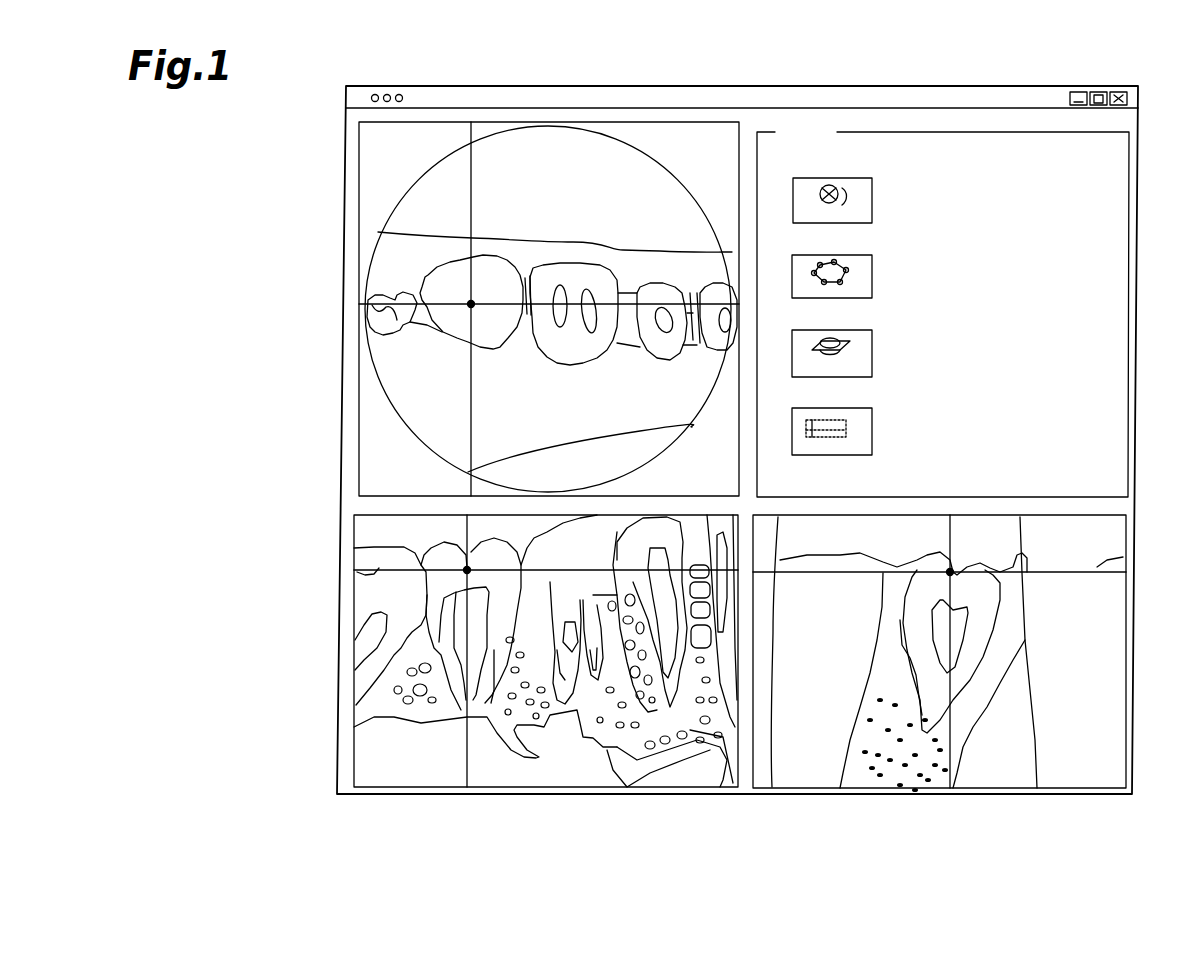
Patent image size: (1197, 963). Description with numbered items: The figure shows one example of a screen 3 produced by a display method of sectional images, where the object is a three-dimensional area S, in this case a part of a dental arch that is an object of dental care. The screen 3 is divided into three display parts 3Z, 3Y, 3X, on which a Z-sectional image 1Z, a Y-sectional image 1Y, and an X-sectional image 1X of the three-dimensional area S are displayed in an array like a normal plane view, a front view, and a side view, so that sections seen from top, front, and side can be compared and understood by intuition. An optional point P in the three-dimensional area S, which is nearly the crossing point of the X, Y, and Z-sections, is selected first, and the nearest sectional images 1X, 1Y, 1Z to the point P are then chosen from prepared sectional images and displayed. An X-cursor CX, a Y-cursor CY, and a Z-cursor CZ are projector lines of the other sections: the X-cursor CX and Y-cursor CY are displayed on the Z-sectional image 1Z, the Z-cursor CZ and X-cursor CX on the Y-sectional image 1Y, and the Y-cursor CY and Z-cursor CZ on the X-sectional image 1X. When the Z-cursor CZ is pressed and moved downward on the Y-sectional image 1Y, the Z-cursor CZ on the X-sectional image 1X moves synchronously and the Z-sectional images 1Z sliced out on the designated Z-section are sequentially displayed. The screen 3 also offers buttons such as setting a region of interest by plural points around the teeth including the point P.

The screen 3 is at (863, 88).
The Z-sectional image 1Z is at (655, 140).
The display part 3Z is at (549, 275).
The Y-sectional image 1Y is at (577, 777).
The display part 3Y is at (546, 677).
The X-sectional image 1X is at (808, 777).
The display part 3X is at (939, 677).
The X-cursor CX is at (471, 142).
The Y-cursor CY is at (698, 304).
The Z-cursor CZ is at (354, 548).
The optional point P is at (471, 306).
The three-dimensional area S is at (579, 236).